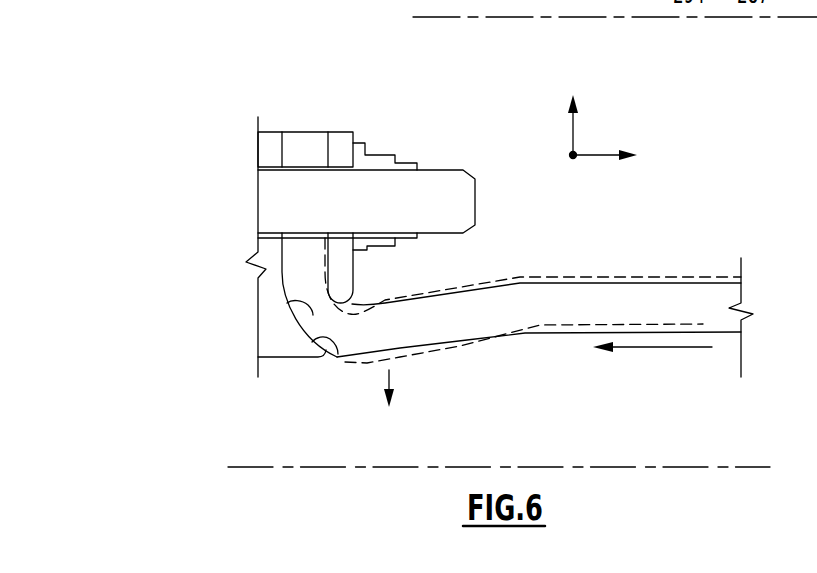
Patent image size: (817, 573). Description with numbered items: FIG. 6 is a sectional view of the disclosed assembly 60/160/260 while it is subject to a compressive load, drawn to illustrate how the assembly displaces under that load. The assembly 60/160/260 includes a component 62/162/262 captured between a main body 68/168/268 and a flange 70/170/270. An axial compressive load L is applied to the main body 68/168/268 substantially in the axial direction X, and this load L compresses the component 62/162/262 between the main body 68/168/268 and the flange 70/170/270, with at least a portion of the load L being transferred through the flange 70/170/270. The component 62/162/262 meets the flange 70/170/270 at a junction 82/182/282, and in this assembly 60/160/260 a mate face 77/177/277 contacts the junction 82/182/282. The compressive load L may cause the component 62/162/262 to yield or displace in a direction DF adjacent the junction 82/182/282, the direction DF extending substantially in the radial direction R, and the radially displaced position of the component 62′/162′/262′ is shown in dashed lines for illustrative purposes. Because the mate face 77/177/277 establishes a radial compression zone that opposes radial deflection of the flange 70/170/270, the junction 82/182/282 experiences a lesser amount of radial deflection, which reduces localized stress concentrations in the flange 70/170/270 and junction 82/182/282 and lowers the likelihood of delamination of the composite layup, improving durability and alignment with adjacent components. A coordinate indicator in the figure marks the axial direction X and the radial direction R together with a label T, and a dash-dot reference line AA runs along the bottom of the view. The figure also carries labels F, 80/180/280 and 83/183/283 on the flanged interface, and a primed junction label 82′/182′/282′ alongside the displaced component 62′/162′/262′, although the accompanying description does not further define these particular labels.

The assembly 60 is at (367, 132).
The assembly 160 is at (367, 132).
The assembly 260 is at (367, 132).
The flange 70 is at (331, 117).
The flange 170 is at (331, 117).
The flange 270 is at (295, 132).
The fitting body 80 is at (375, 182).
The fitting body 180 is at (375, 182).
The fitting body 280 is at (355, 144).
The sleeve / ferrule 83 is at (415, 270).
The sleeve / ferrule 183 is at (415, 270).
The sleeve / ferrule 283 is at (350, 308).
The component 62 is at (537, 317).
The component 162 is at (537, 317).
The component 262 is at (537, 317).
The component 62′ is at (533, 285).
The component 162′ is at (533, 285).
The component 262′ is at (520, 277).
The main body 68 is at (727, 297).
The main body 168 is at (727, 297).
The main body 268 is at (662, 297).
The junction 82 is at (219, 326).
The junction 182 is at (219, 326).
The junction 282 is at (313, 320).
The tube bend radius in deflected position 82′ is at (224, 353).
The tube bend radius in deflected position 182′ is at (224, 353).
The tube bend radius in deflected position 282′ is at (287, 303).
The mate face 77 is at (371, 344).
The mate face 177 is at (371, 344).
The mate face 277 is at (337, 357).
The fitting F is at (452, 170).
The direction of displacement DF is at (389, 378).
The axial compressive load L is at (652, 349).
The axis AA is at (752, 467).
The radial direction R is at (573, 109).
The axial direction X is at (614, 156).
The tangential direction T is at (573, 157).